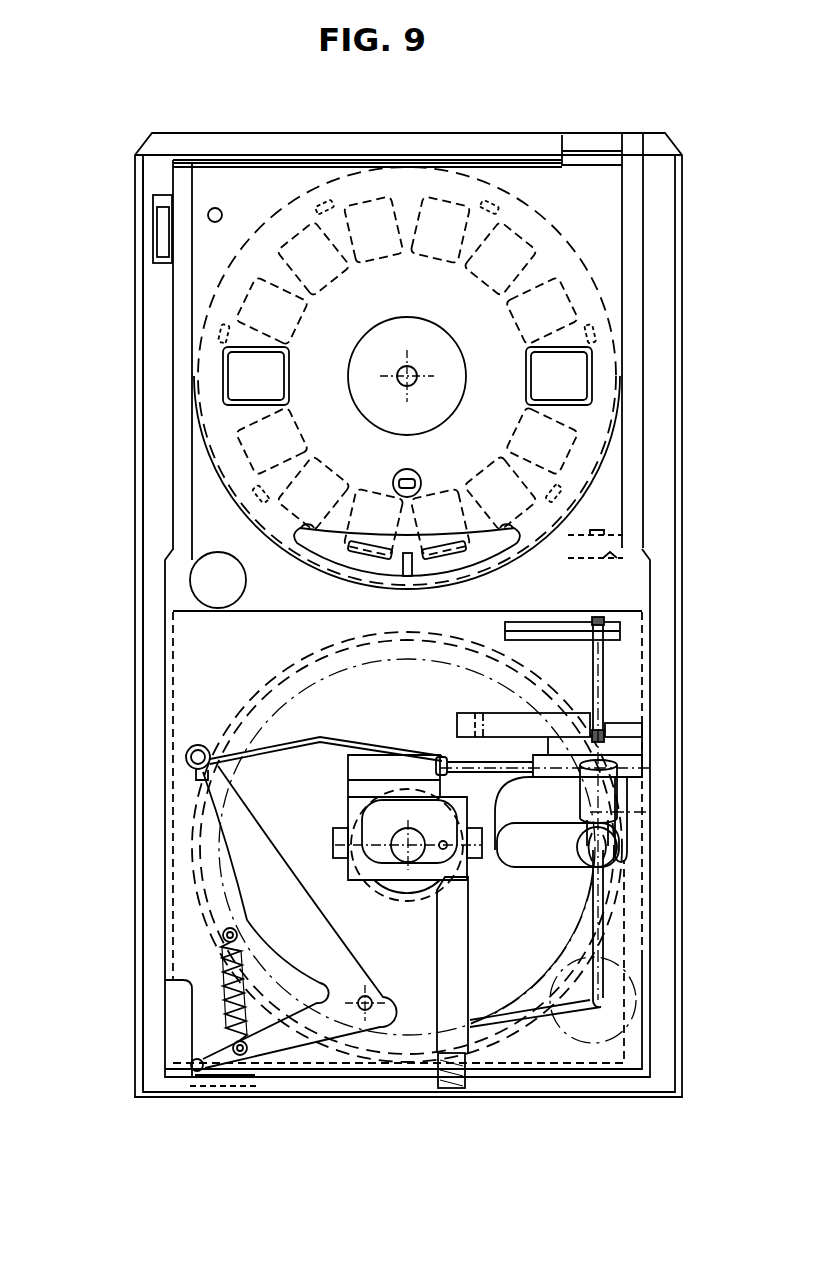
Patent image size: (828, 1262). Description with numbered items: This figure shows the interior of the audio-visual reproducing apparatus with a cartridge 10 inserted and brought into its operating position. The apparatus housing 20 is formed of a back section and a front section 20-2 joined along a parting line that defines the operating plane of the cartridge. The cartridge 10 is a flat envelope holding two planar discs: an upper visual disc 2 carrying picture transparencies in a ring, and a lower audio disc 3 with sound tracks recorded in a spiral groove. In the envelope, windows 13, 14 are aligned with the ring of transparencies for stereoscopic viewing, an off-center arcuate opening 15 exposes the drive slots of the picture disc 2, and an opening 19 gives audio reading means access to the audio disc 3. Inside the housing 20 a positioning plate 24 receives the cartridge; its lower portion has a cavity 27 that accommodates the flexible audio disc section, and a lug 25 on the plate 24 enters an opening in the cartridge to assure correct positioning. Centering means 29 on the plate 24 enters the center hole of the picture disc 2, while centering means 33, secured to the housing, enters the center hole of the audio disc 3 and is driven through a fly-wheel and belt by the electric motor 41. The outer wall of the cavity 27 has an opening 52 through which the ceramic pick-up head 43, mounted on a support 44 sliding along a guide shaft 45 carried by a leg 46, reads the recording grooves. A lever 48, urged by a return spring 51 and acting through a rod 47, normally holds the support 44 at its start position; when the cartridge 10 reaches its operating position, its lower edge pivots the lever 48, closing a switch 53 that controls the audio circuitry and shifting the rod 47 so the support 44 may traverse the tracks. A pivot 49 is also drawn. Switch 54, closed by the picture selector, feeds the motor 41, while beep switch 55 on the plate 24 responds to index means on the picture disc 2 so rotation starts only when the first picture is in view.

The housing 20 is at (130, 197).
The front section 20-2 is at (142, 301).
The cartridge 10 is at (604, 187).
The visual disc 2 is at (556, 234).
The lug 25 is at (221, 209).
The window 13 is at (226, 396).
The window 14 is at (592, 376).
The centering means for the picture disc 29 is at (414, 371).
The switch 55 is at (411, 476).
The arcuate opening 15 is at (305, 533).
The switch 54 is at (595, 533).
The cavity 27 is at (215, 646).
The audio disc 3 is at (283, 672).
The positioning plate 24 is at (165, 712).
The rod 47 is at (330, 740).
The guide shaft 45 is at (458, 763).
The support 44 is at (643, 748).
The pick-up head 43 is at (643, 812).
The opening 52 is at (497, 806).
The opening 19 is at (540, 856).
The centering means for the audio disc 33 is at (395, 841).
The lever 48 is at (245, 832).
The pivot pin 49 is at (372, 1000).
The leg 46 is at (453, 944).
The electric motor 41 is at (632, 965).
The return spring 51 is at (225, 972).
The switch 53 is at (193, 1084).